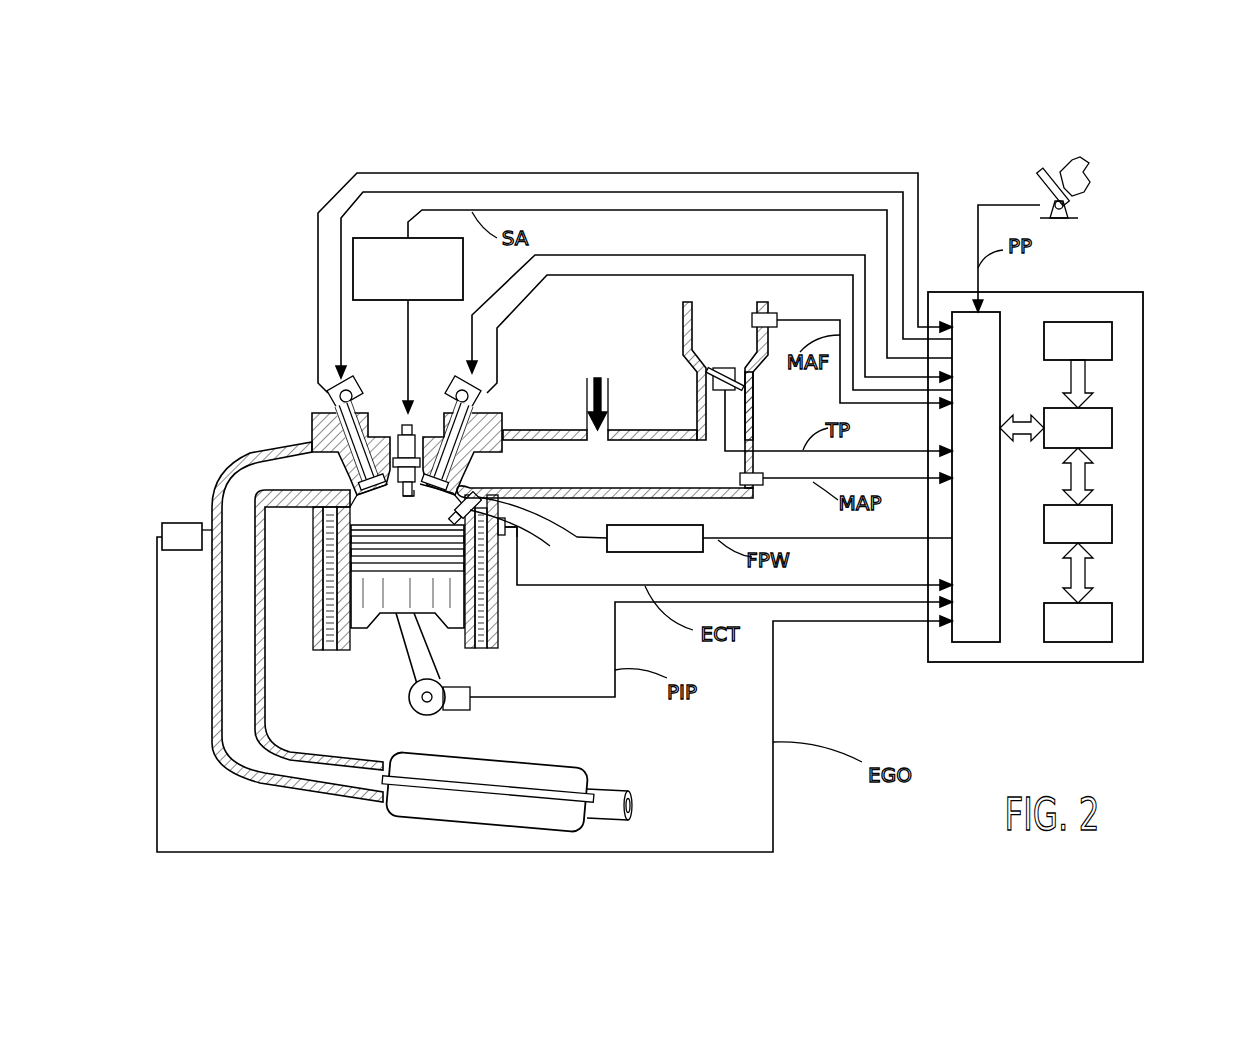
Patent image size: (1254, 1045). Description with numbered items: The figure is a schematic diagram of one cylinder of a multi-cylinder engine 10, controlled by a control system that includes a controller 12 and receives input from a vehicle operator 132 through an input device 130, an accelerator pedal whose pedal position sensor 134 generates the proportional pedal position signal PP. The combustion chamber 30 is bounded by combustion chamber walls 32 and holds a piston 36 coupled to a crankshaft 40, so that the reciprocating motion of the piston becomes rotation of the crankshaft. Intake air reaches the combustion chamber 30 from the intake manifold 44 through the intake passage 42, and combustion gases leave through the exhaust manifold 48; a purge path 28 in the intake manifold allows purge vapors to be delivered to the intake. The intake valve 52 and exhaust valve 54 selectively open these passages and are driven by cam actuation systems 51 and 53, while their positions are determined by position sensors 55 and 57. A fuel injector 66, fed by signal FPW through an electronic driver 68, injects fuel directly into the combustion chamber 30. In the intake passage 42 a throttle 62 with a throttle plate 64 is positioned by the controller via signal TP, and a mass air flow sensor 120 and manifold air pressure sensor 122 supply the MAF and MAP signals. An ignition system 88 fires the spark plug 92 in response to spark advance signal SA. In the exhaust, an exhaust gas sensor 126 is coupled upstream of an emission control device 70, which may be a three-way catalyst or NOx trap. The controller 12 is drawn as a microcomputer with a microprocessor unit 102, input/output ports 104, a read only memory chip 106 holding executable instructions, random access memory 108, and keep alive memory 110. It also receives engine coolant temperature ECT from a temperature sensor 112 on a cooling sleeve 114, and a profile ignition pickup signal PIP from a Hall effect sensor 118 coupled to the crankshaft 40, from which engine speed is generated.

The engine 10 is at (246, 366).
The controller 12 is at (1140, 294).
The purge path 28 is at (608, 405).
The combustion chamber 30 is at (404, 500).
The combustion chamber walls 32 is at (349, 650).
The piston 36 is at (392, 600).
The crankshaft 40 is at (418, 712).
The intake passage 42 is at (712, 347).
The intake manifold 44 is at (650, 476).
The exhaust manifold 48 is at (270, 483).
The cam actuation system 51 is at (460, 386).
The intake valve 52 is at (455, 478).
The cam actuation system 53 is at (347, 386).
The exhaust valve 54 is at (358, 470).
The position sensor 55 is at (478, 405).
The position sensor 57 is at (338, 404).
The throttle 62 is at (745, 380).
The throttle plate 64 is at (708, 373).
The fuel injector 66 is at (528, 526).
The electronic driver 68 is at (632, 553).
The emission control device 70 is at (548, 760).
The ignition system 88 is at (366, 240).
The spark plug 92 is at (412, 410).
The microprocessor unit 102 is at (1112, 432).
The input/output ports 104 is at (1000, 322).
The read only memory chip 106 is at (1112, 338).
The random access memory 108 is at (1112, 527).
The keep alive memory 110 is at (1112, 625).
The temperature sensor 112 is at (510, 538).
The cooling sleeve 114 is at (490, 602).
The Hall effect sensor 118 is at (456, 712).
The mass air flow sensor 120 is at (768, 316).
The manifold air pressure sensor 122 is at (760, 487).
The exhaust gas sensor 126 is at (162, 524).
The input device 130 is at (1042, 185).
The vehicle operator 132 is at (1088, 170).
The pedal position sensor 134 is at (1078, 218).